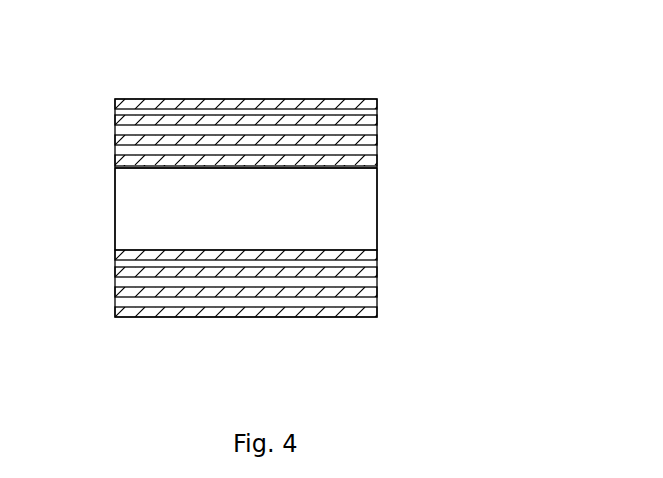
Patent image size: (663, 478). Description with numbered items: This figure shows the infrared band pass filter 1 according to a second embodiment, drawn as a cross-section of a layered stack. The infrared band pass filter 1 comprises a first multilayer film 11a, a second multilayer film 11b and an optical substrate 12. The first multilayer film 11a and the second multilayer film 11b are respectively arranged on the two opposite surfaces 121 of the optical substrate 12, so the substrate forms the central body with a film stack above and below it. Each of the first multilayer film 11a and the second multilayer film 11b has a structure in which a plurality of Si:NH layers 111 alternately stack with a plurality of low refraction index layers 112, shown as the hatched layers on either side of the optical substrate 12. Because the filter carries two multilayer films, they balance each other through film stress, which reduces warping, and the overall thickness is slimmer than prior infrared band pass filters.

The infrared band pass filter 1 is at (136, 76).
The first multilayer film 11a is at (379, 84).
The second multilayer film 11b is at (379, 333).
The Si:NH layer 111 is at (370, 163).
The low refraction index layer 112 is at (117, 153).
The optical substrate 12 is at (377, 208).
The surfaces of the optical substrate 121 is at (118, 164).